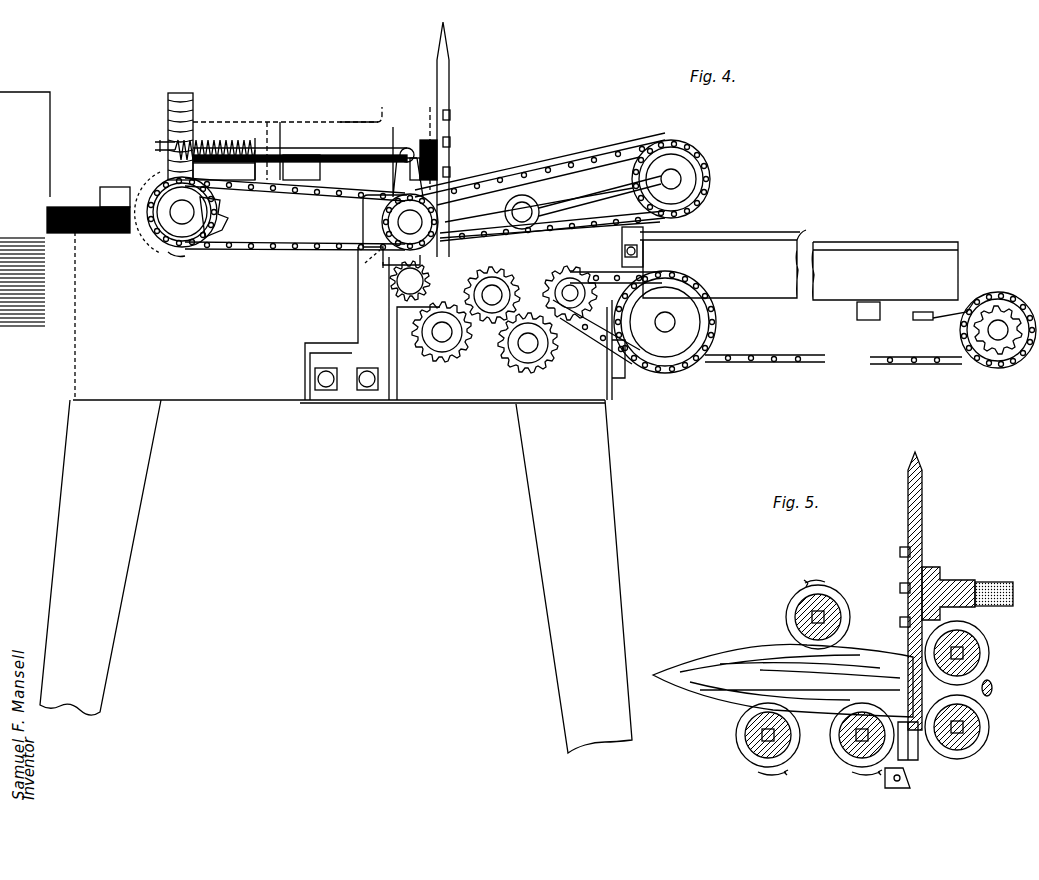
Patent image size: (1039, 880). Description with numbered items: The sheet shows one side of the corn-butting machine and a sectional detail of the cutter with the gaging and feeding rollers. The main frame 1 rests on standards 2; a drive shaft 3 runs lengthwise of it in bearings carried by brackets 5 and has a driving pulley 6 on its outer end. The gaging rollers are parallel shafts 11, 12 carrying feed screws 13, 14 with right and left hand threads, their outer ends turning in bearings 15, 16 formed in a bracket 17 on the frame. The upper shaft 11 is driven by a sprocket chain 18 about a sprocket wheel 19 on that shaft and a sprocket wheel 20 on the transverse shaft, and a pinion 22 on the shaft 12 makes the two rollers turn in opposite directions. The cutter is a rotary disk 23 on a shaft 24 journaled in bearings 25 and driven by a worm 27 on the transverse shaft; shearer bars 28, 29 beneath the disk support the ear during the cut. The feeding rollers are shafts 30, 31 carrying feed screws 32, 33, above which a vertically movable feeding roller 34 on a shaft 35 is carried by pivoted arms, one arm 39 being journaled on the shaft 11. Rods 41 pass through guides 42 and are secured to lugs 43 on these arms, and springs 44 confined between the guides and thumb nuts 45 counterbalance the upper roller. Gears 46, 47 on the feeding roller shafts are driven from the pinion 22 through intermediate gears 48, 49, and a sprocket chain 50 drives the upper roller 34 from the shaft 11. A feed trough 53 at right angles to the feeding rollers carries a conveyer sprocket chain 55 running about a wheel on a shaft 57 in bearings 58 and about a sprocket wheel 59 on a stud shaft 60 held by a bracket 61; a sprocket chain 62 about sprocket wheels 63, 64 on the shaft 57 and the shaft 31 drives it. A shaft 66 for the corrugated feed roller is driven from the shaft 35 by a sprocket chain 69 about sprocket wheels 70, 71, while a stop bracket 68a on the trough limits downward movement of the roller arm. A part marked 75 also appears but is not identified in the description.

In FIG. 4, the main frame 1 is at (268, 402).
In FIG. 4, the standards 2 is at (138, 491).
In FIG. 4, the drive shaft 3 is at (145, 233).
In FIG. 4, the brackets 5 is at (170, 255).
In FIG. 4, the driving pulley 6 is at (15, 95).
In FIG. 4, the upper gaging roller shaft 11 is at (398, 222).
In FIG. 5, the upper gaging roller shaft 11 is at (990, 662).
In FIG. 4, the lower gaging roller shaft 12 is at (404, 284).
In FIG. 5, the lower gaging roller shaft 12 is at (989, 723).
In FIG. 5, the upper gaging feed screw 13 is at (983, 646).
In FIG. 5, the lower gaging feed screw 14 is at (985, 735).
In FIG. 4, the bearing 15 is at (363, 208).
In FIG. 4, the bearing 16 is at (389, 292).
In FIG. 4, the bracket 17 is at (358, 320).
In FIG. 4, the sprocket chain 18 is at (262, 247).
In FIG. 4, the sprocket wheel 19 is at (378, 256).
In FIG. 4, the sprocket wheel 20 is at (184, 97).
In FIG. 4, the pinion 22 is at (385, 266).
In FIG. 4, the rotary cutter disk 23 is at (449, 70).
In FIG. 5, the rotary cutter disk 23 is at (925, 514).
In FIG. 4, the cutter shaft 24 is at (352, 122).
In FIG. 5, the cutter shaft 24 is at (987, 580).
In FIG. 4, the bearings 25 is at (393, 127).
In FIG. 4, the worm 27 is at (160, 190).
In FIG. 5, the shearer bar 28 is at (912, 785).
In FIG. 5, the shearer bar 29 is at (921, 758).
In FIG. 4, the feeding roller shaft 30 is at (489, 288).
In FIG. 5, the feeding roller shaft 30 is at (765, 735).
In FIG. 4, the feeding roller shaft 31 is at (572, 270).
In FIG. 5, the feeding roller shaft 31 is at (846, 752).
In FIG. 5, the lower feed screw 32 is at (750, 755).
In FIG. 5, the lower feed screw 33 is at (829, 782).
In FIG. 5, the upper feeding roller 34 is at (835, 597).
In FIG. 4, the upper feeding roller shaft 35 is at (505, 212).
In FIG. 5, the upper feeding roller shaft 35 is at (812, 616).
In FIG. 4, the arm 39 is at (520, 194).
In FIG. 4, the rods 41 is at (358, 150).
In FIG. 4, the guides 42 is at (283, 141).
In FIG. 4, the lugs 43 is at (414, 157).
In FIG. 4, the springs 44 is at (258, 138).
In FIG. 4, the thumb nut 45 is at (160, 142).
In FIG. 4, the gear 46 is at (498, 272).
In FIG. 4, the gear 47 is at (586, 280).
In FIG. 4, the intermediate gear 48 is at (442, 363).
In FIG. 4, the intermediate gear 49 is at (525, 374).
In FIG. 4, the sprocket chain 50 is at (466, 195).
In FIG. 4, the feed trough 53 is at (807, 240).
In FIG. 4, the conveyer sprocket chain 55 is at (833, 363).
In FIG. 4, the shaft 57 is at (672, 322).
In FIG. 4, the bearings 58 is at (575, 180).
In FIG. 4, the sprocket wheel 59 is at (984, 366).
In FIG. 4, the stud shaft 60 is at (986, 333).
In FIG. 4, the bracket 61 is at (915, 300).
In FIG. 4, the sprocket chain 62 is at (642, 373).
In FIG. 4, the sprocket wheel 63 is at (690, 333).
In FIG. 4, the sprocket wheel 64 is at (600, 342).
In FIG. 4, the shaft 66 is at (674, 177).
In FIG. 4, the stop bracket 68a is at (643, 248).
In FIG. 4, the sprocket chain 69 is at (631, 151).
In FIG. 4, the sprocket wheel 70 is at (690, 186).
In FIG. 4, the sprocket wheel 71 is at (580, 192).
In FIG. 4, the spring stop 75 is at (232, 137).